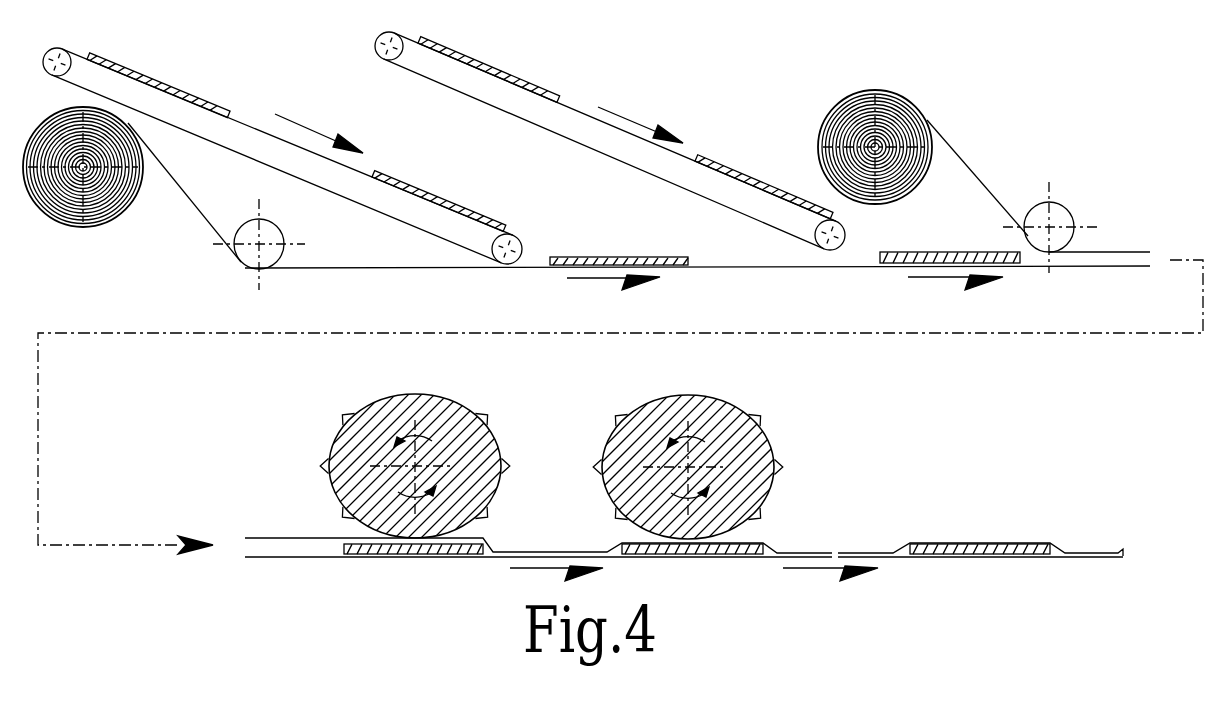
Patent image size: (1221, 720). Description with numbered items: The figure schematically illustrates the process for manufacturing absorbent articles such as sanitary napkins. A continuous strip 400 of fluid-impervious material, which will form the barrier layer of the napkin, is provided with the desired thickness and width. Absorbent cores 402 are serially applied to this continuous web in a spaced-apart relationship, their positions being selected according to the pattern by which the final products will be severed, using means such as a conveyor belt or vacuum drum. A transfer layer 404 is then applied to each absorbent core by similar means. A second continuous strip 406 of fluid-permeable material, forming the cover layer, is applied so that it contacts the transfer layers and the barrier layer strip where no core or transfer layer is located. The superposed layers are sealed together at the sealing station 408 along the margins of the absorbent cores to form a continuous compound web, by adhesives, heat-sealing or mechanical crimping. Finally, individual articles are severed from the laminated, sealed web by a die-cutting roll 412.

The continuous strip of fluid impervious material 400 is at (182, 196).
The absorbent cores 402 is at (203, 100).
The transfer layer 404 is at (517, 83).
The second continuous strip of fluid-permeable material 406 is at (972, 168).
The sealing station 408 is at (504, 413).
The die-cutting roll 412 is at (774, 411).